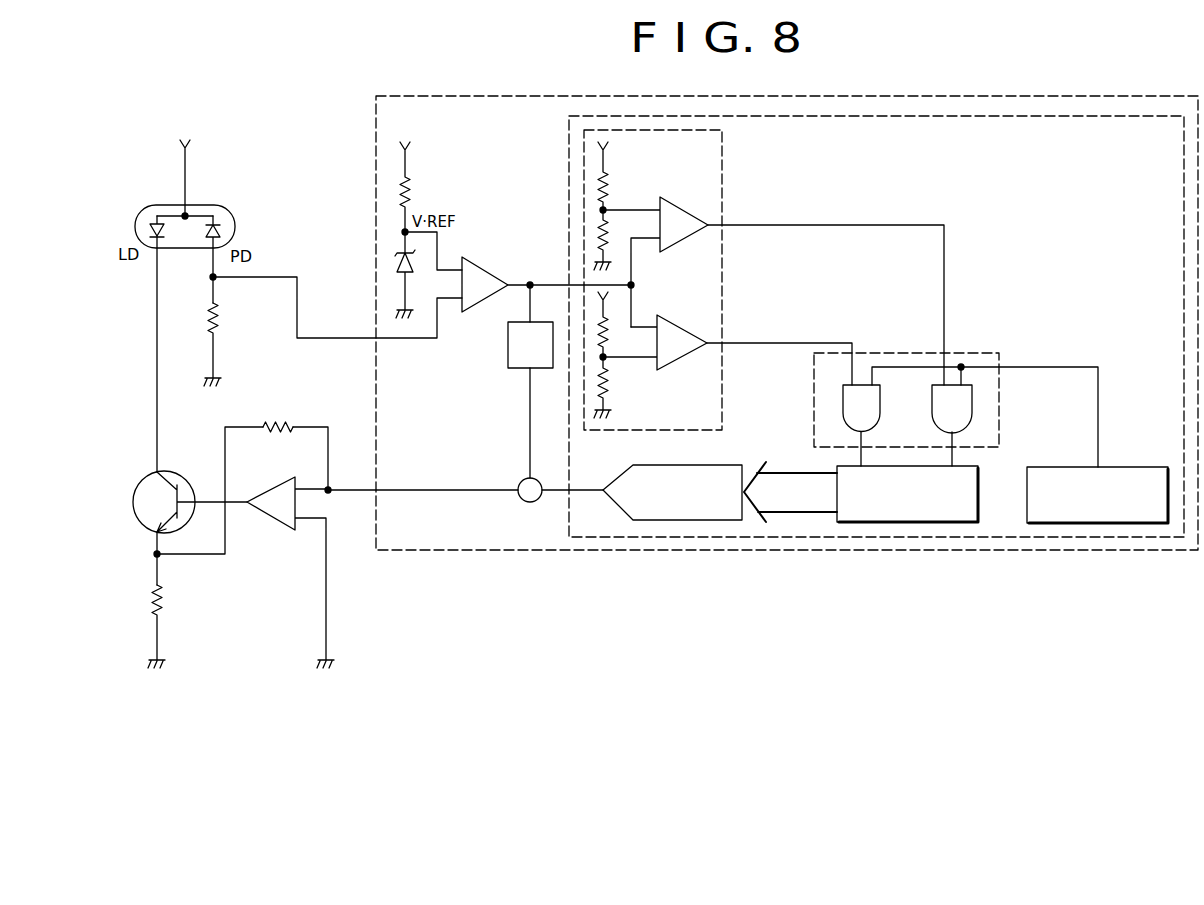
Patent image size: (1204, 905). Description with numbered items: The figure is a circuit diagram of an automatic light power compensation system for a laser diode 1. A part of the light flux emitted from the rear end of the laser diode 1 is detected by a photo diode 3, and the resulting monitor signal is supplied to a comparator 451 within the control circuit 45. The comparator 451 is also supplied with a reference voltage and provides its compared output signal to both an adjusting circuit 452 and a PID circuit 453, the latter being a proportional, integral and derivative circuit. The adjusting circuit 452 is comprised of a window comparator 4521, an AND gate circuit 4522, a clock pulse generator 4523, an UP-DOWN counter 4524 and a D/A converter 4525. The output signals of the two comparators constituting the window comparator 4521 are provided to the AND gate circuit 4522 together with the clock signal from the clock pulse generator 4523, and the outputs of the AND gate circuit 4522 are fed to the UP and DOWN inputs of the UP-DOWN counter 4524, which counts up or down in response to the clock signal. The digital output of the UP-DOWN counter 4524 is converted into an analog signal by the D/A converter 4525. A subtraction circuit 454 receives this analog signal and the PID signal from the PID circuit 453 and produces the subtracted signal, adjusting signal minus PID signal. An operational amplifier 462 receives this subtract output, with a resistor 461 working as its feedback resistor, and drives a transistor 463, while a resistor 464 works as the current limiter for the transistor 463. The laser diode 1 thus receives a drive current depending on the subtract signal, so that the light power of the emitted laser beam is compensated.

The laser diode 1 is at (147, 231).
The photo diode 3 is at (231, 231).
The control circuit 45 is at (930, 96).
The comparator 451 is at (493, 268).
The adjusting circuit 452 is at (1005, 116).
The PID circuit 453 is at (508, 351).
The subtraction circuit 454 is at (521, 501).
The window comparator 4521 is at (722, 180).
The AND gate circuit 4522 is at (895, 352).
The clock pulse generator 4523 is at (1058, 467).
The UP-DOWN counter 4524 is at (915, 522).
The D/A converter 4525 is at (728, 464).
The resistor 461 is at (276, 414).
The operational amplifier 462 is at (264, 518).
The transistor 463 is at (133, 505).
The resistor 464 is at (134, 626).